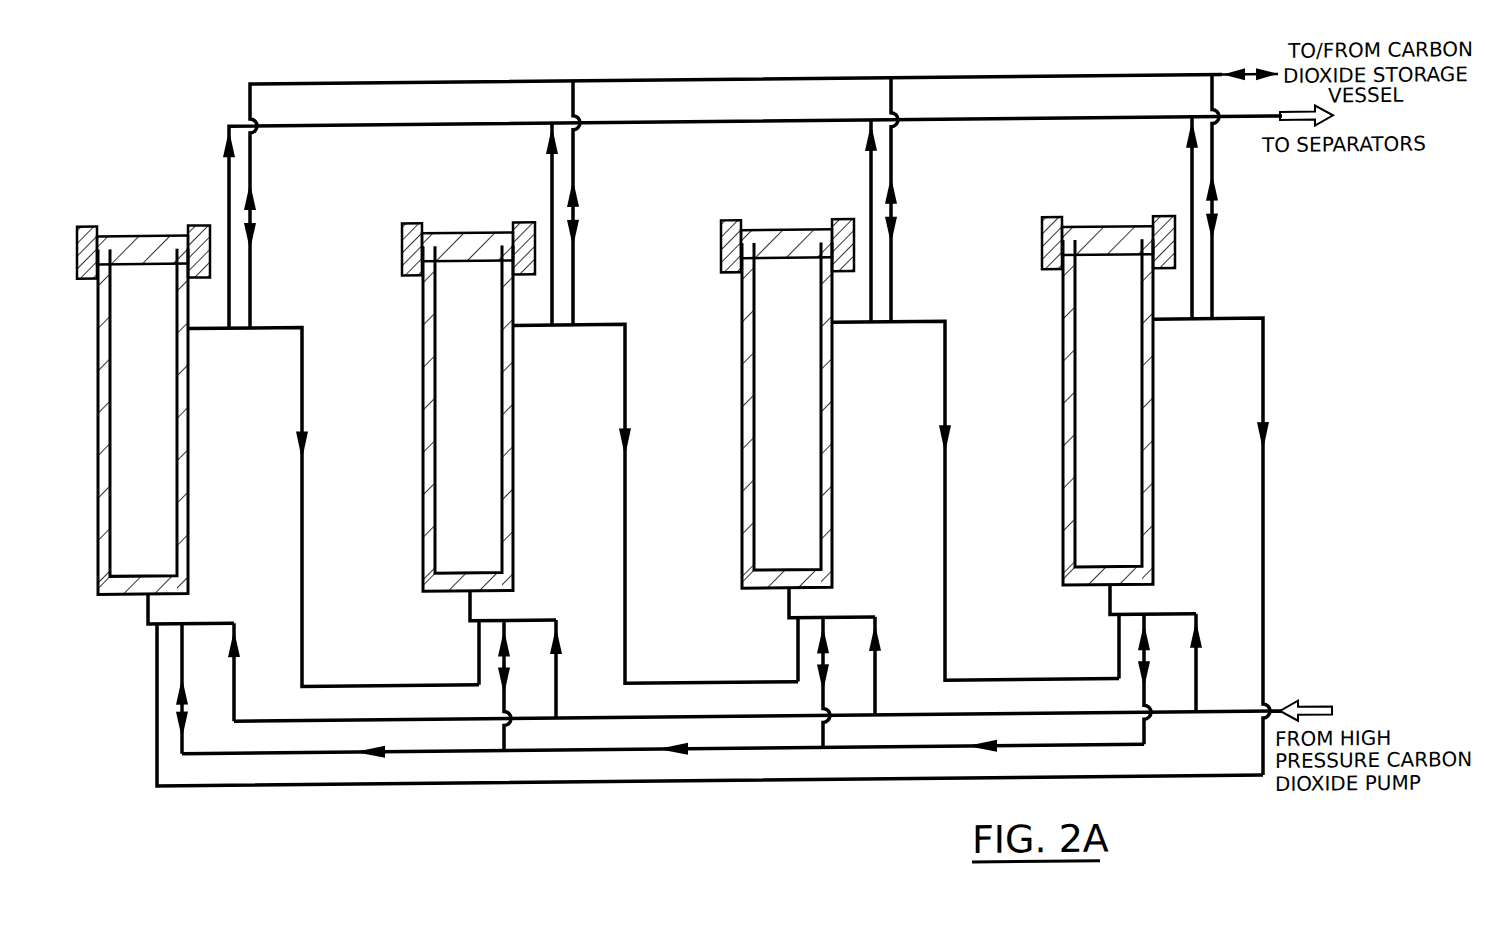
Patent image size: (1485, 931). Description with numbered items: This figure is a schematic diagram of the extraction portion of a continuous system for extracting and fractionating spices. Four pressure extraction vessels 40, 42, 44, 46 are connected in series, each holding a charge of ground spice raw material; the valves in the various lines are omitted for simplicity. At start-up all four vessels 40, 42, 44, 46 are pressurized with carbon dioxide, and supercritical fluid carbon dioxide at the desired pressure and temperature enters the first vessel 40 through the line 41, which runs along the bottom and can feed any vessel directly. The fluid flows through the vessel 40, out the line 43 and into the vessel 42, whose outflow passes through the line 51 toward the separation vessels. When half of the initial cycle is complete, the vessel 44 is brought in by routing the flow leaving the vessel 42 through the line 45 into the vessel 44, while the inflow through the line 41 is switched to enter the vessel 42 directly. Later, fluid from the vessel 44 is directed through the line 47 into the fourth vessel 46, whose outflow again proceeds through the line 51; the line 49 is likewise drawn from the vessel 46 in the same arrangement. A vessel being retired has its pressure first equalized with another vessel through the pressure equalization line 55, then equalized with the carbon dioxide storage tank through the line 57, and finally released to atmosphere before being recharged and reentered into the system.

The first pressure extraction vessel 40 is at (163, 398).
The second pressure extraction vessel 42 is at (487, 400).
The third pressure extraction vessel 44 is at (805, 393).
The fourth pressure extraction vessel 46 is at (1126, 394).
The line 41 is at (237, 706).
The line 43 is at (305, 501).
The line 45 is at (628, 504).
The line 47 is at (947, 501).
The interconnecting line 49 is at (1265, 501).
The line 51 is at (806, 132).
The pressure equalization line 55 is at (797, 756).
The line 57 is at (447, 84).